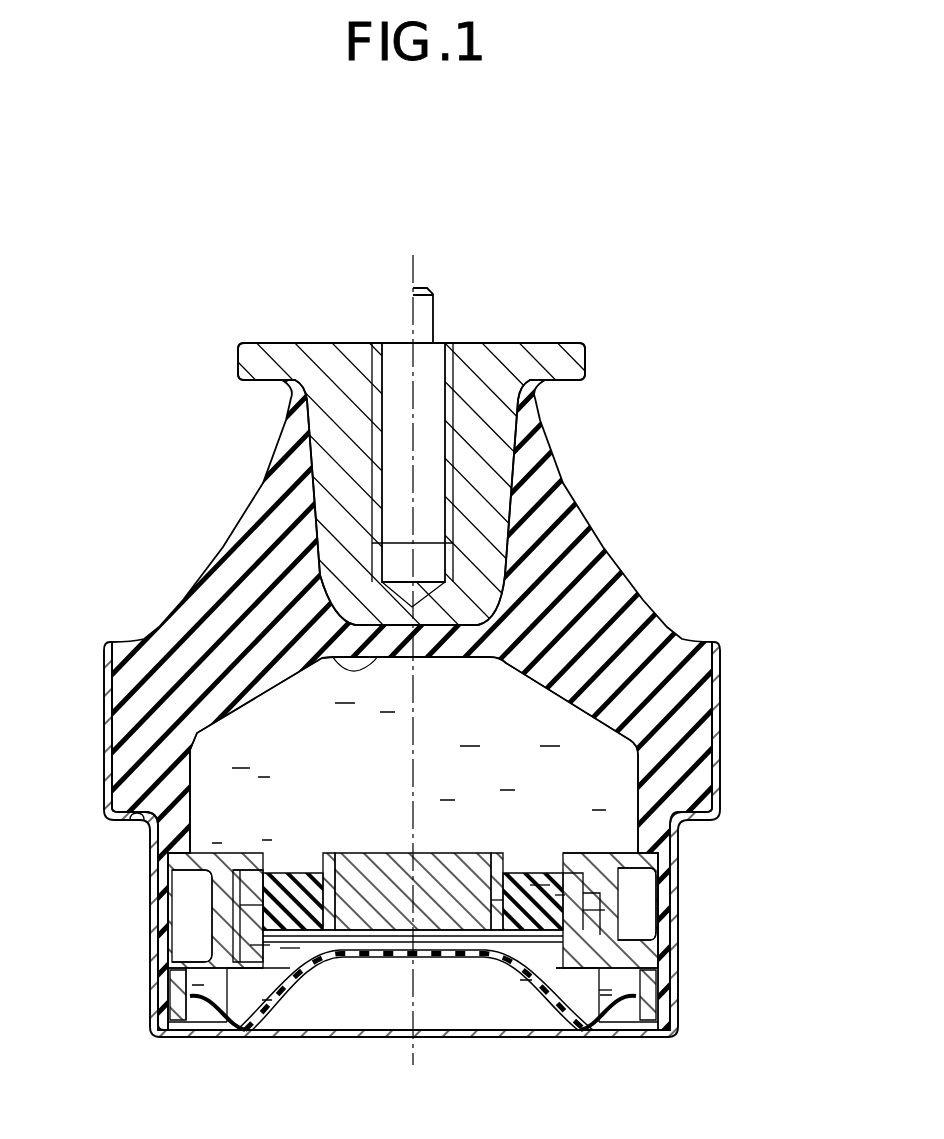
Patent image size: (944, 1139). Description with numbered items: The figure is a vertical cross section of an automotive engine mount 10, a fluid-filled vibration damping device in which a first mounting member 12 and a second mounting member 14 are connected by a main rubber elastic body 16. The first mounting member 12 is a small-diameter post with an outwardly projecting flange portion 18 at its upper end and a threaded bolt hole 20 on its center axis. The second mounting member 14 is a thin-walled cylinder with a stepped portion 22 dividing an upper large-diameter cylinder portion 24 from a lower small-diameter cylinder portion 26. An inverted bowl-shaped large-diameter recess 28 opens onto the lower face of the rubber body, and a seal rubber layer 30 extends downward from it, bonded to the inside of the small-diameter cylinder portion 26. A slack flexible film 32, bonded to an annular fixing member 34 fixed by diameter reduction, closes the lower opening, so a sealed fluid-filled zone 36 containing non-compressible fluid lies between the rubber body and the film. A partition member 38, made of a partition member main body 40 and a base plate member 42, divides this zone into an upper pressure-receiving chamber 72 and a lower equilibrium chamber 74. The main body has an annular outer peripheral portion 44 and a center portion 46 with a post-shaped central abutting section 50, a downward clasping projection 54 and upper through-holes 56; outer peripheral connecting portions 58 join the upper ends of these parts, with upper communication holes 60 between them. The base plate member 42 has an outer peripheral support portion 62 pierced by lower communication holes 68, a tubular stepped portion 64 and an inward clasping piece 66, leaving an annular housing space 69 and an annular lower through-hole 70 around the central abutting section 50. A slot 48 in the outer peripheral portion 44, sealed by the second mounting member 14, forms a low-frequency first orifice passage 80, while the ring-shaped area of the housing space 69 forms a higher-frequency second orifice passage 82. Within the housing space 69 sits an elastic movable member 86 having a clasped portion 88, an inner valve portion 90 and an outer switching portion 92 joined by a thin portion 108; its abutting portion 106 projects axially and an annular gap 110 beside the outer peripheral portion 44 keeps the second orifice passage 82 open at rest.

The engine mount 10 is at (636, 438).
The first mounting member 12 is at (305, 463).
The second mounting member 14 is at (104, 775).
The main rubber elastic body 16 is at (580, 565).
The flange portion 18 is at (553, 355).
The bolt hole 20 is at (406, 379).
The stepped portion 22 is at (132, 828).
The large-diameter cylinder portion 24 is at (108, 702).
The small-diameter cylinder portion 26 is at (150, 958).
The large-diameter recess 28 is at (348, 665).
The seal rubber layer 30 is at (160, 990).
The flexible film 32 is at (620, 1010).
The fixing member 34 is at (178, 1012).
The fluid-filled zone 36 is at (520, 700).
The partition member 38 is at (300, 832).
The partition member main body 40 is at (222, 848).
The base plate member 42 is at (585, 955).
The outer peripheral portion 44 is at (630, 880).
The center portion 46 is at (397, 850).
The slot 48 is at (640, 905).
The central abutting section 50 is at (405, 900).
The clasping projection 54 is at (292, 875).
The upper through-holes 56 is at (327, 853).
The outer peripheral connecting portions 58 is at (250, 880).
The upper communication holes 60 is at (568, 905).
The outer peripheral support portion 62 is at (203, 978).
The stepped portion 64 is at (258, 958).
The clasping piece 66 is at (290, 955).
The lower communication holes 68 is at (238, 968).
The housing space 69 is at (240, 870).
The lower through-hole 70 is at (495, 945).
The pressure-receiving chamber 72 is at (409, 773).
The equilibrium chamber 74 is at (402, 990).
The first orifice passage 80 is at (190, 918).
The second orifice passage 82 is at (600, 1000).
The elastic movable member 86 is at (497, 930).
The clasped portion 88 is at (540, 905).
The valve portion 90 is at (495, 905).
The switching portion 92 is at (600, 915).
The abutting portion 106 is at (592, 893).
The thin portion 108 is at (560, 900).
The gap 110 is at (240, 912).